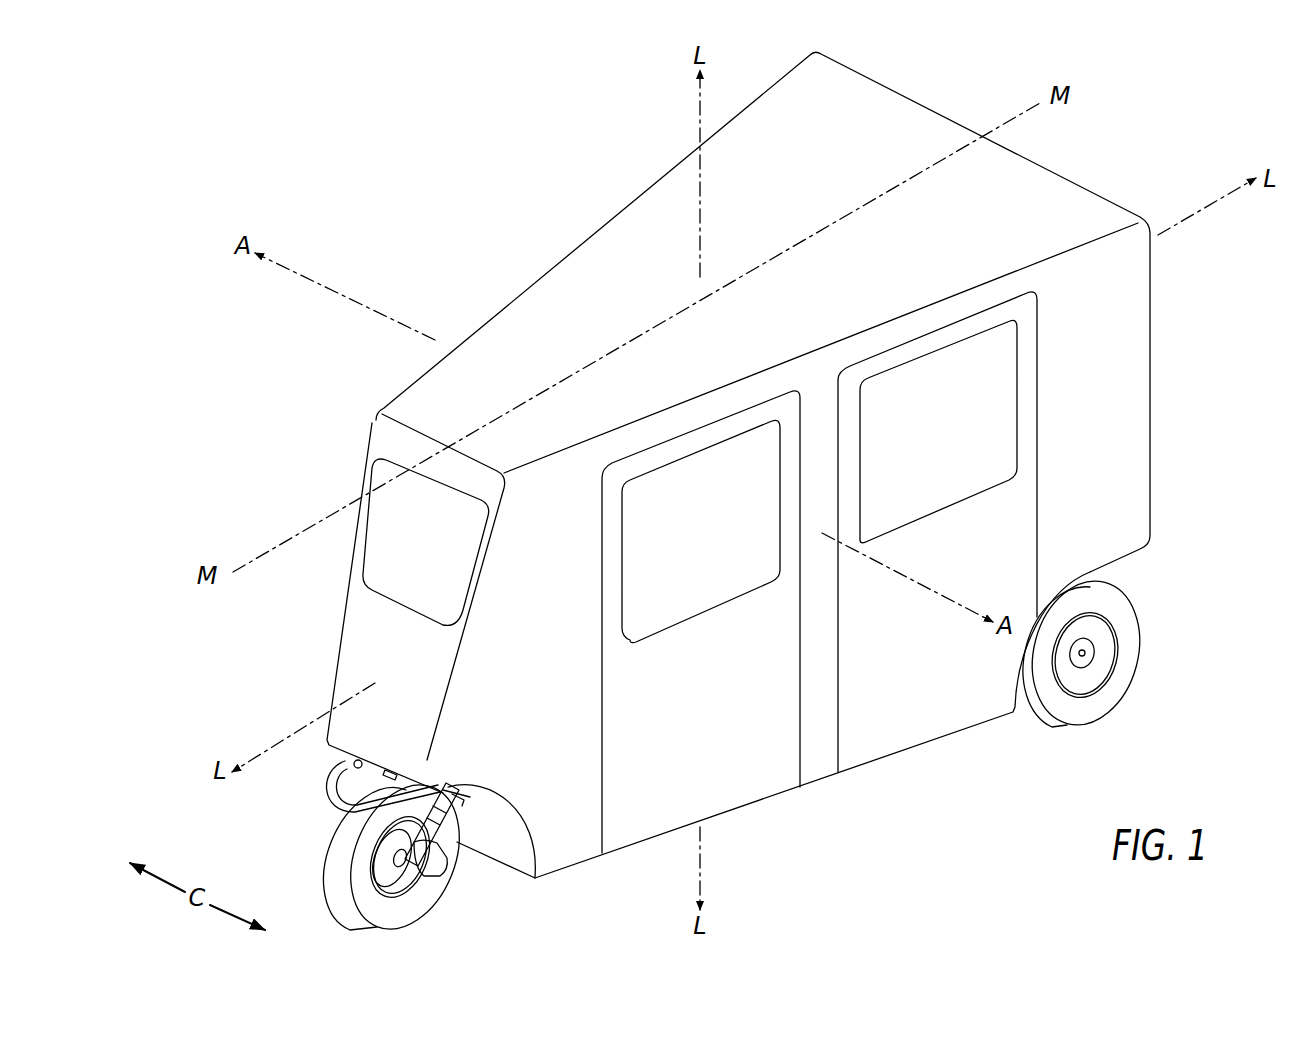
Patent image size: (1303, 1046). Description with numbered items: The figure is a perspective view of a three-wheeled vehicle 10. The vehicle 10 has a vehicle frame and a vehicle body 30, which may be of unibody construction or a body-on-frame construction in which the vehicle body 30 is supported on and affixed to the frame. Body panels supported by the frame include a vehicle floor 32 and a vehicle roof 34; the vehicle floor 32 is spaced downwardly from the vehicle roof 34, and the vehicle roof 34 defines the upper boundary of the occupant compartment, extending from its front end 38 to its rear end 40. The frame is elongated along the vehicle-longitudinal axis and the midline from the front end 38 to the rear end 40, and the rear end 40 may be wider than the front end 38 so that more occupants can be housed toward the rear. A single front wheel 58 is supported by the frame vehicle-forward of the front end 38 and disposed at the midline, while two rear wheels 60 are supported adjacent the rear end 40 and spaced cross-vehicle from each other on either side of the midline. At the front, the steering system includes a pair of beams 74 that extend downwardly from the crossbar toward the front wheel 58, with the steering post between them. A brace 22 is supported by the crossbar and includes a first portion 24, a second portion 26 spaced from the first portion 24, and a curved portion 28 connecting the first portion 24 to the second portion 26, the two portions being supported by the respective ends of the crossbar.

The three-wheeled vehicle 10 is at (1163, 128).
The brace 22 is at (322, 808).
The first portion 24 is at (452, 798).
The second portion 26 is at (332, 760).
The curved portion 28 is at (327, 856).
The vehicle body 30 is at (618, 190).
The vehicle floor 32 is at (569, 868).
The vehicle roof 34 is at (548, 305).
The front end 38 is at (490, 882).
The rear end 40 is at (1177, 415).
The front wheel 58 is at (420, 925).
The rear wheels 60 is at (1152, 625).
The beams 74 is at (448, 832).